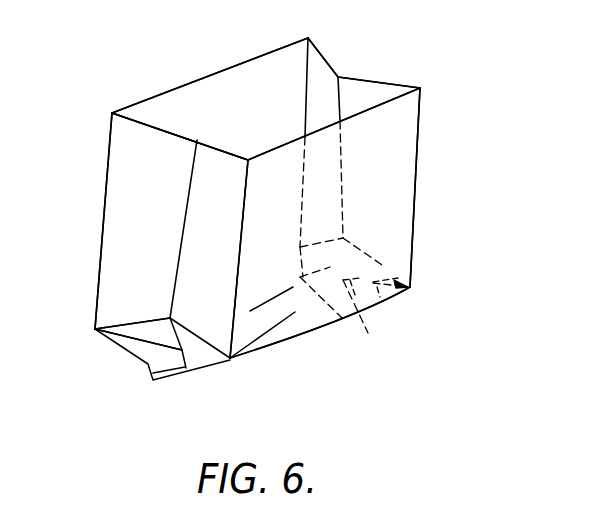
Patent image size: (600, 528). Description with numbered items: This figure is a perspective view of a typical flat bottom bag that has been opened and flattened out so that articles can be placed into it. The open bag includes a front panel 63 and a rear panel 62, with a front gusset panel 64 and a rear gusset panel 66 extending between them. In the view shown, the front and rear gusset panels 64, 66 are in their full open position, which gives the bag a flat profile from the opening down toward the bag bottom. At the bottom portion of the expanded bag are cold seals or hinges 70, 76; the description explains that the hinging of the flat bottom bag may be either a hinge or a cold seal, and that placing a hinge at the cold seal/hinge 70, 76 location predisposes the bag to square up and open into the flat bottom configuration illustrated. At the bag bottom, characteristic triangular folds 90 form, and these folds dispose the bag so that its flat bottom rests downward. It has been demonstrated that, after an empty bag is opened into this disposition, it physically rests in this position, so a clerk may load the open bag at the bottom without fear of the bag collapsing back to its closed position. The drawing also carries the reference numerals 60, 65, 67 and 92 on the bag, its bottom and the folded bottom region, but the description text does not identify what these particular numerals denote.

The bag 60 is at (423, 120).
The rear panel 62 is at (245, 78).
The front panel 63 is at (383, 188).
The front gusset panel 64 is at (220, 163).
The bottom 65 is at (263, 335).
The rear gusset panel 66 is at (325, 78).
The bottom corner fold 67 is at (372, 297).
The cold seal/hinge 70 is at (202, 360).
The cold seal/hinge 76 is at (355, 320).
The triangular folds 90 is at (157, 330).
The hidden bottom fold 92 is at (370, 258).